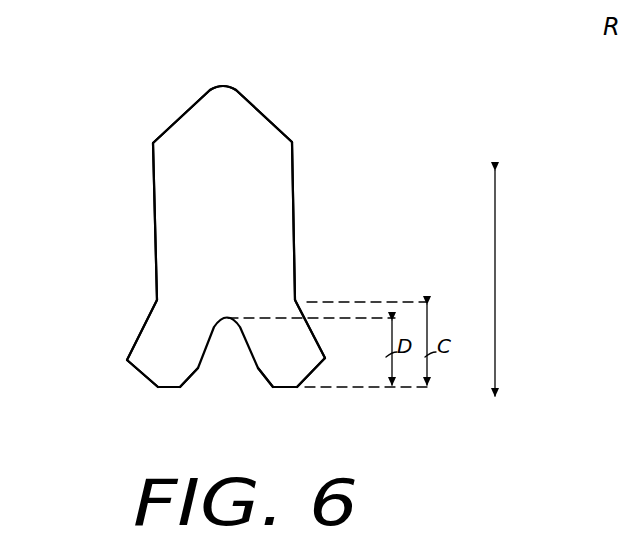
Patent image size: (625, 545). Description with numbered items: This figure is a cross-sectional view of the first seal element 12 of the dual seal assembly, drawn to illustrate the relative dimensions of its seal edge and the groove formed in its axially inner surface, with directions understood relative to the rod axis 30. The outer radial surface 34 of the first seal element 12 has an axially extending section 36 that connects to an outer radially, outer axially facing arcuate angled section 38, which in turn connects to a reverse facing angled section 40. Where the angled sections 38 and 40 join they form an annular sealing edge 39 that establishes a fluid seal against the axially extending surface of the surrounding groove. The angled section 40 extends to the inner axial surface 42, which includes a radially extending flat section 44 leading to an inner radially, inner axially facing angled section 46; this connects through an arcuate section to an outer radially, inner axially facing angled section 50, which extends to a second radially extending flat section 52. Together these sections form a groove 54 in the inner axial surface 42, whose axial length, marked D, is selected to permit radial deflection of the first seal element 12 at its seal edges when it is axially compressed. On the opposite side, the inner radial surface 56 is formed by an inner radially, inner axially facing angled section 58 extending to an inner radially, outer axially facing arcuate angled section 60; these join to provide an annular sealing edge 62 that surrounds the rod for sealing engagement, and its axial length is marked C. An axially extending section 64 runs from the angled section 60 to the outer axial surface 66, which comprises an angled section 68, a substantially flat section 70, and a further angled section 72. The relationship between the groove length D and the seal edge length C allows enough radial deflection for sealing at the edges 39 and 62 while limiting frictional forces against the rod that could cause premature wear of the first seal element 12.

The first seal element 12 is at (91, 92).
The rod axis 30 is at (497, 287).
The outer radial surface 34 is at (120, 158).
The axially extending section 36 is at (153, 183).
The angled section 38 is at (148, 322).
The annular sealing edge 39 is at (104, 349).
The angled section 40 is at (132, 370).
The inner axial surface 42 is at (197, 416).
The radially extending flat section 44 is at (168, 390).
The angled section 46 is at (198, 371).
The angled section 50 is at (262, 364).
The radially extending flat section 52 is at (293, 389).
The groove 54 is at (225, 358).
The inner radial surface 56 is at (350, 225).
The angled section 58 is at (320, 366).
The angled section 60 is at (305, 313).
The annular sealing edge 62 is at (326, 358).
The axially extending section 64 is at (296, 186).
The outer axial surface 66 is at (205, 47).
The angled section 68 is at (258, 108).
The substantially flat section 70 is at (223, 88).
The angled section 72 is at (187, 110).